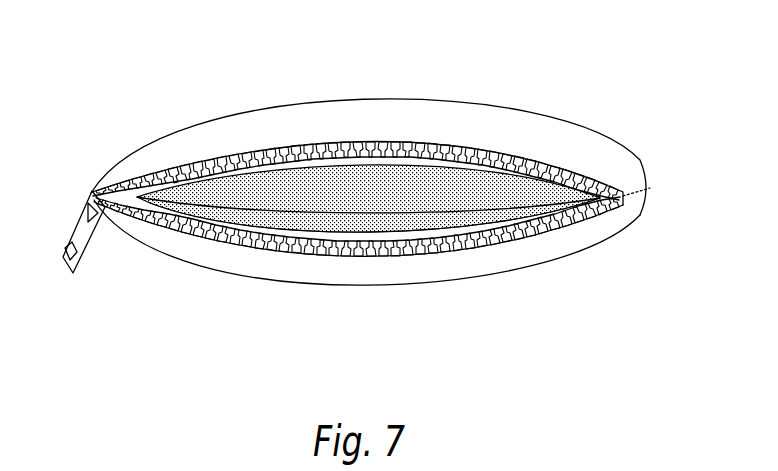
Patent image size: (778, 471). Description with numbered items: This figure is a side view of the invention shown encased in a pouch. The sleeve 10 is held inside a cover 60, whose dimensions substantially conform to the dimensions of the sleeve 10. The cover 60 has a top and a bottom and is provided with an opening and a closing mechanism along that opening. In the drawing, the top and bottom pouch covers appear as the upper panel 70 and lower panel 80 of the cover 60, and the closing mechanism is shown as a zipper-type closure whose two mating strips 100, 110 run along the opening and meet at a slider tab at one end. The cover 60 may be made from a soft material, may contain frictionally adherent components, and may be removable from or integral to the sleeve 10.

The sleeve 10 is at (230, 197).
The cover 60 is at (669, 113).
The upper panel 70 is at (460, 132).
The lower panel 80 is at (497, 255).
The lower zipper strip 100 is at (322, 253).
The upper zipper strip 110 is at (185, 152).